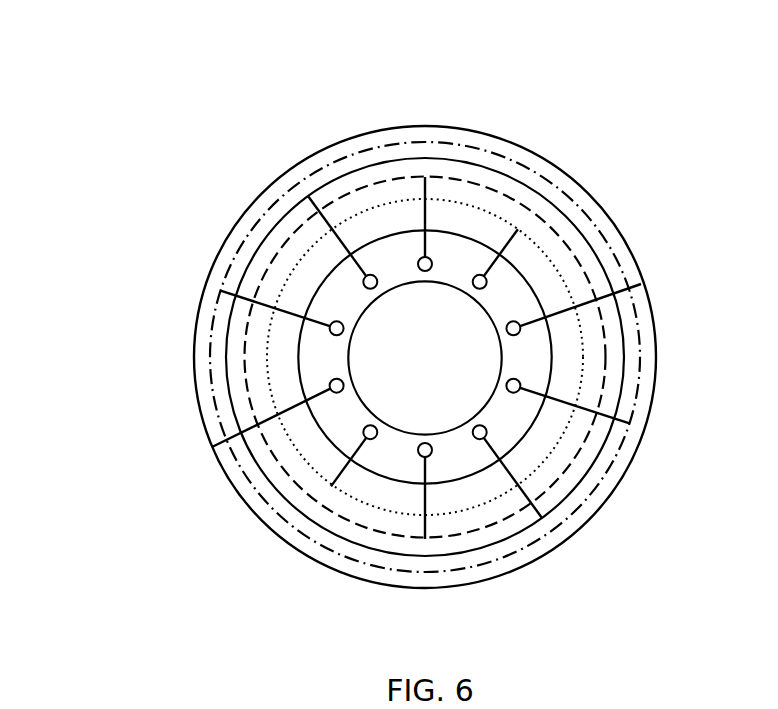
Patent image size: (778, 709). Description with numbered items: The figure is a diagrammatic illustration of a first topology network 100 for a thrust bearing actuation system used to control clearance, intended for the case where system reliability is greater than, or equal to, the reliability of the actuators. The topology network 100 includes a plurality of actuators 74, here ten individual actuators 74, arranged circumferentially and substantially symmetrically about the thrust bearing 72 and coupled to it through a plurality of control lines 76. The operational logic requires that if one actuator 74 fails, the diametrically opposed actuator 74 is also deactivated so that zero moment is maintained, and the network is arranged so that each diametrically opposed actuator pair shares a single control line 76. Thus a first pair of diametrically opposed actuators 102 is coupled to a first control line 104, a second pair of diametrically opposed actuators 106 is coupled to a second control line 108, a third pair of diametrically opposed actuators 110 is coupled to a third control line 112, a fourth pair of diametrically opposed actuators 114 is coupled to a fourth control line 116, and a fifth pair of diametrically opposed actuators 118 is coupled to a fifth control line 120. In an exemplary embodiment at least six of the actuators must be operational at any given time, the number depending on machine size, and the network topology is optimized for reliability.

The first topology network 100 is at (128, 110).
The thrust bearing 72 is at (560, 490).
The actuators 74 is at (458, 292).
The control lines 76 is at (217, 247).
The first pair of diametrically opposed actuators 102 is at (542, 242).
The first control line 104 is at (548, 218).
The second pair of diametrically opposed actuators 106 is at (437, 250).
The second control line 108 is at (610, 353).
The third pair of diametrically opposed actuators 110 is at (366, 263).
The third control line 112 is at (243, 457).
The fourth pair of diametrically opposed actuators 114 is at (323, 345).
The fourth control line 116 is at (368, 568).
The fifth pair of diametrically opposed actuators 118 is at (570, 285).
The fifth control line 120 is at (250, 210).